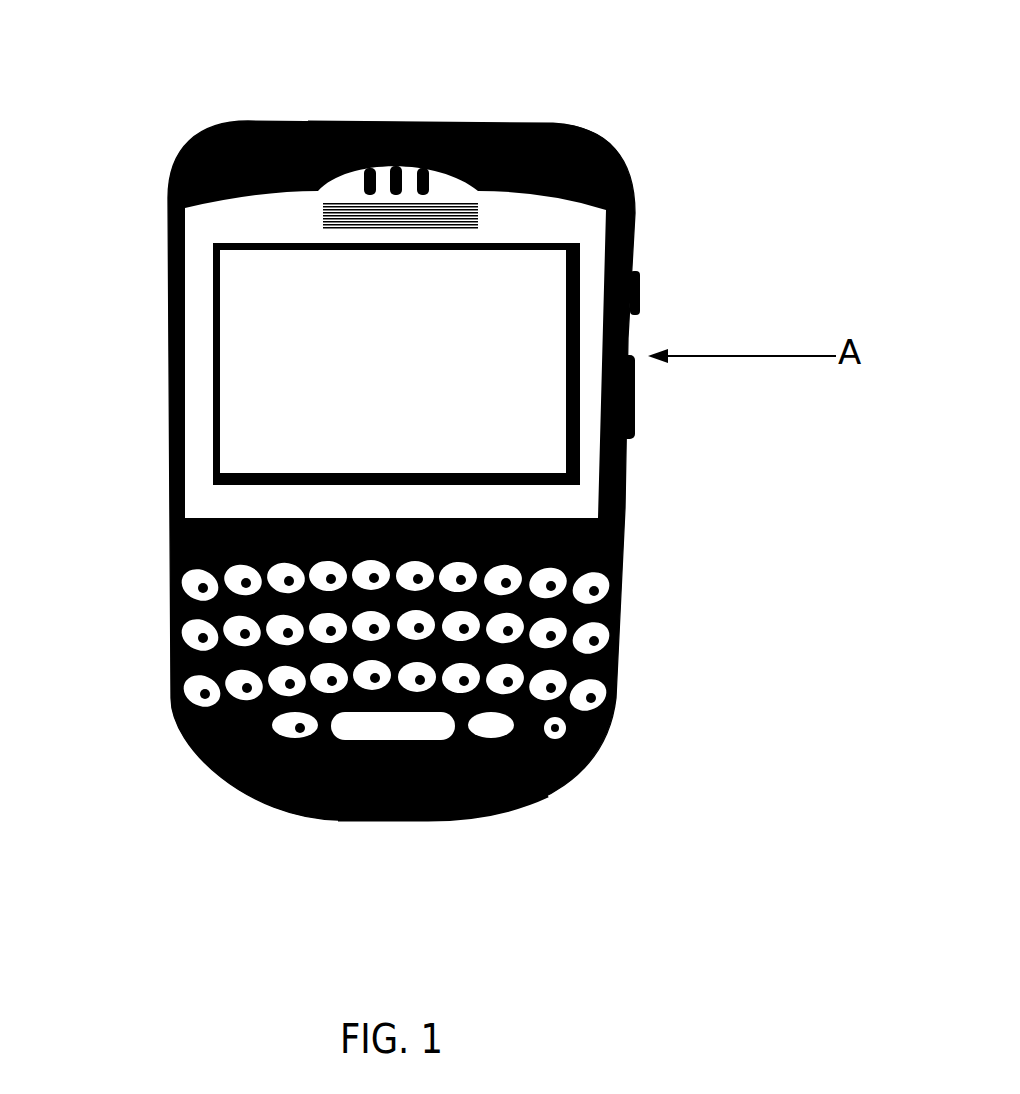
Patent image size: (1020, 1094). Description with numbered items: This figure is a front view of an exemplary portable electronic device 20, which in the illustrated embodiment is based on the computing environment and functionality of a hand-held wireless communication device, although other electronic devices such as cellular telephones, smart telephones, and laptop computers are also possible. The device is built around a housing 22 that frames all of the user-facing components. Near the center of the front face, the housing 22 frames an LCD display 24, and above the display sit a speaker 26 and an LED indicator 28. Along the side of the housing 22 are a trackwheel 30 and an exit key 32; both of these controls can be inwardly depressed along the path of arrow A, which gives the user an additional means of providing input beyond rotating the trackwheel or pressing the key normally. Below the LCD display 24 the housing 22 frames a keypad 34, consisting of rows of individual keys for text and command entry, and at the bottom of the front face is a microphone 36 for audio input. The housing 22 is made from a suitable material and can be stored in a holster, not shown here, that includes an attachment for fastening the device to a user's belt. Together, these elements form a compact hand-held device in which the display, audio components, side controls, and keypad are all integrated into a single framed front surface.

The portable electronic device 20 is at (678, 90).
The housing 22 is at (540, 788).
The LCD display 24 is at (232, 341).
The speaker 26 is at (382, 160).
The LED indicator 28 is at (561, 130).
The trackwheel 30 is at (629, 281).
The exit key 32 is at (622, 393).
The keypad 34 is at (567, 687).
The microphone 36 is at (480, 808).